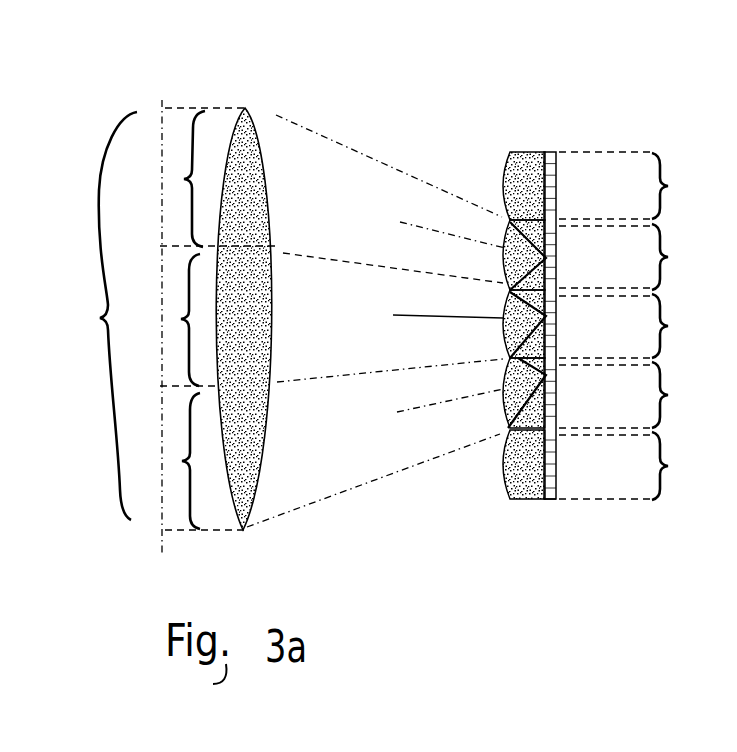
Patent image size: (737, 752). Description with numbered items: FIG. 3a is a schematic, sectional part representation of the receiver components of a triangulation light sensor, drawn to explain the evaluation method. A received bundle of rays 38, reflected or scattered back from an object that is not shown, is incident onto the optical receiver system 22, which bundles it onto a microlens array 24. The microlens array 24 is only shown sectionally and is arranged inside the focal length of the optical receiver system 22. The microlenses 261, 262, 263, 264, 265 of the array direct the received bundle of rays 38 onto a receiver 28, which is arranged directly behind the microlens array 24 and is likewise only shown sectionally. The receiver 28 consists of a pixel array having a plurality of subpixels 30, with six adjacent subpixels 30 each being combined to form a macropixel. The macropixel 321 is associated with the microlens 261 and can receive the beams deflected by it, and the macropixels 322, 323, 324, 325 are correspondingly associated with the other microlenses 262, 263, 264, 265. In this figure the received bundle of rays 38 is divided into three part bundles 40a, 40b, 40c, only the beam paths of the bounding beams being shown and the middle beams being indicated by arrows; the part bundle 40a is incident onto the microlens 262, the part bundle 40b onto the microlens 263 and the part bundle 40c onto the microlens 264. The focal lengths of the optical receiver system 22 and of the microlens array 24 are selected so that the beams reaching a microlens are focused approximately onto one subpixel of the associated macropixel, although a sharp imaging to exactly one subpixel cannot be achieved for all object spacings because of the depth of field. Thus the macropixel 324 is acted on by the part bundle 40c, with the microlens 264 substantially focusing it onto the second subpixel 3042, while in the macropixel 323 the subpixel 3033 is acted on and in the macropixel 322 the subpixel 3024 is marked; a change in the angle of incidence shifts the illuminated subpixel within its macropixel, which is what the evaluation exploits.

The optical receiver system 22 is at (252, 152).
The microlens array 24 is at (485, 298).
The subpixels 30 is at (612, 98).
The receiver 28 is at (545, 510).
The received bundle of rays 38 is at (397, 296).
The part bundle 40a is at (198, 177).
The part bundle 40b is at (171, 320).
The part bundle 40c is at (189, 461).
The microlens 261 is at (522, 183).
The microlens 262 is at (516, 272).
The microlens 263 is at (513, 344).
The microlens 264 is at (513, 404).
The microlens 265 is at (502, 475).
The subpixel 3024 is at (552, 258).
The subpixel 3033 is at (552, 316).
The second subpixel 3042 is at (552, 375).
The macropixel 321 is at (643, 185).
The macropixel 322 is at (646, 257).
The macropixel 323 is at (645, 326).
The macropixel 324 is at (644, 395).
The macropixel 325 is at (644, 466).